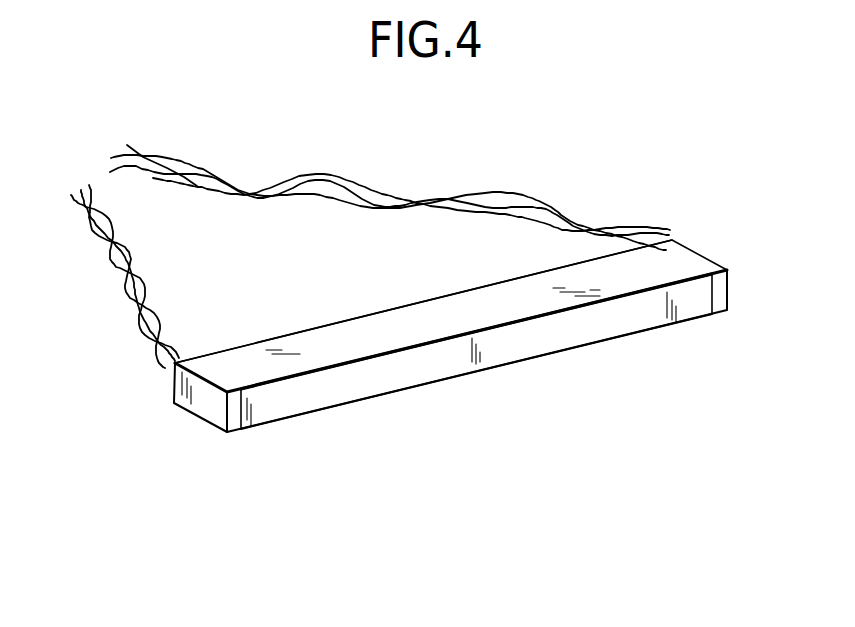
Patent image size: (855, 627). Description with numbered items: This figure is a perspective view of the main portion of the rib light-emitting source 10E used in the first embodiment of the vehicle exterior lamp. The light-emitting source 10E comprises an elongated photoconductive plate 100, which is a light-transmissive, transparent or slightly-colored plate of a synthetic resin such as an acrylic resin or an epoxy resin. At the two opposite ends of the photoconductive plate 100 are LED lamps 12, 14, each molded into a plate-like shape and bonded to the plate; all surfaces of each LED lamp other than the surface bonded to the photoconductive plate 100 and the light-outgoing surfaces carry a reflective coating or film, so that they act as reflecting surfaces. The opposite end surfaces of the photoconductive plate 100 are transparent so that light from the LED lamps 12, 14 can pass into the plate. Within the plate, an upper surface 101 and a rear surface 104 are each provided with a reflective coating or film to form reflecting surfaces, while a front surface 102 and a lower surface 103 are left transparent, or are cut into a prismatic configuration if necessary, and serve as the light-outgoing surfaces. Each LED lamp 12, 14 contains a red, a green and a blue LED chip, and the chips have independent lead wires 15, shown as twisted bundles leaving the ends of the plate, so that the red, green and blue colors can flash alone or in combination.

The light-emitting source 10E is at (315, 440).
The photoconductive plate 100 is at (372, 398).
The upper surface 101 is at (588, 287).
The front surface 102 is at (520, 342).
The lower surface 103 is at (437, 382).
The rear surface 104 is at (360, 317).
The LED lamp 12 is at (233, 423).
The LED lamp 14 is at (720, 289).
The lead wires 15 is at (130, 132).